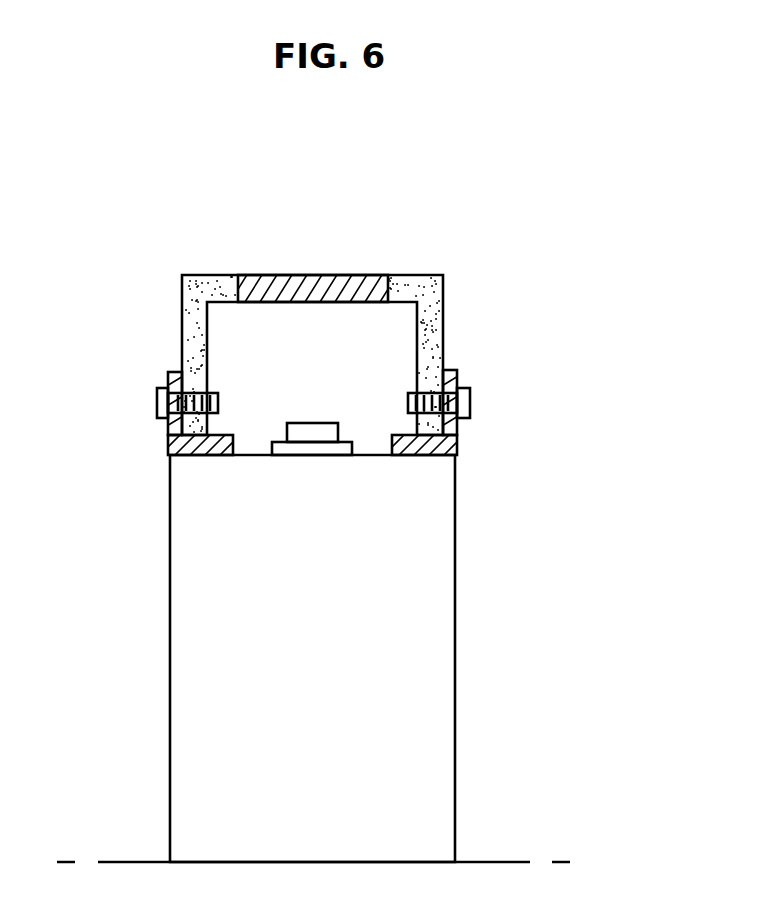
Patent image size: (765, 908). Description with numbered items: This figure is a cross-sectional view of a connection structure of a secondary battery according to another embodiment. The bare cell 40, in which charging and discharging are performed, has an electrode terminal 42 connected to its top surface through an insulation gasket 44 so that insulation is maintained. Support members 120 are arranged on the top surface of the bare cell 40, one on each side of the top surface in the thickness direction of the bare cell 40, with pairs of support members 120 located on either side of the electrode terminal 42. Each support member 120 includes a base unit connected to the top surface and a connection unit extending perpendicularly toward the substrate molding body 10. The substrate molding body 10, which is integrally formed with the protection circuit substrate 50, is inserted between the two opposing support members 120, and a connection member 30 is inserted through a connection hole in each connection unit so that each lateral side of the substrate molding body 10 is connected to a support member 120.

The support member 120 is at (478, 353).
The substrate molding body 10 is at (182, 357).
The protection circuit substrate 50 is at (312, 292).
The connection member 30 is at (467, 403).
The insulation gasket 44 is at (285, 455).
The electrode terminal 42 is at (325, 437).
The bare cell 40 is at (193, 632).